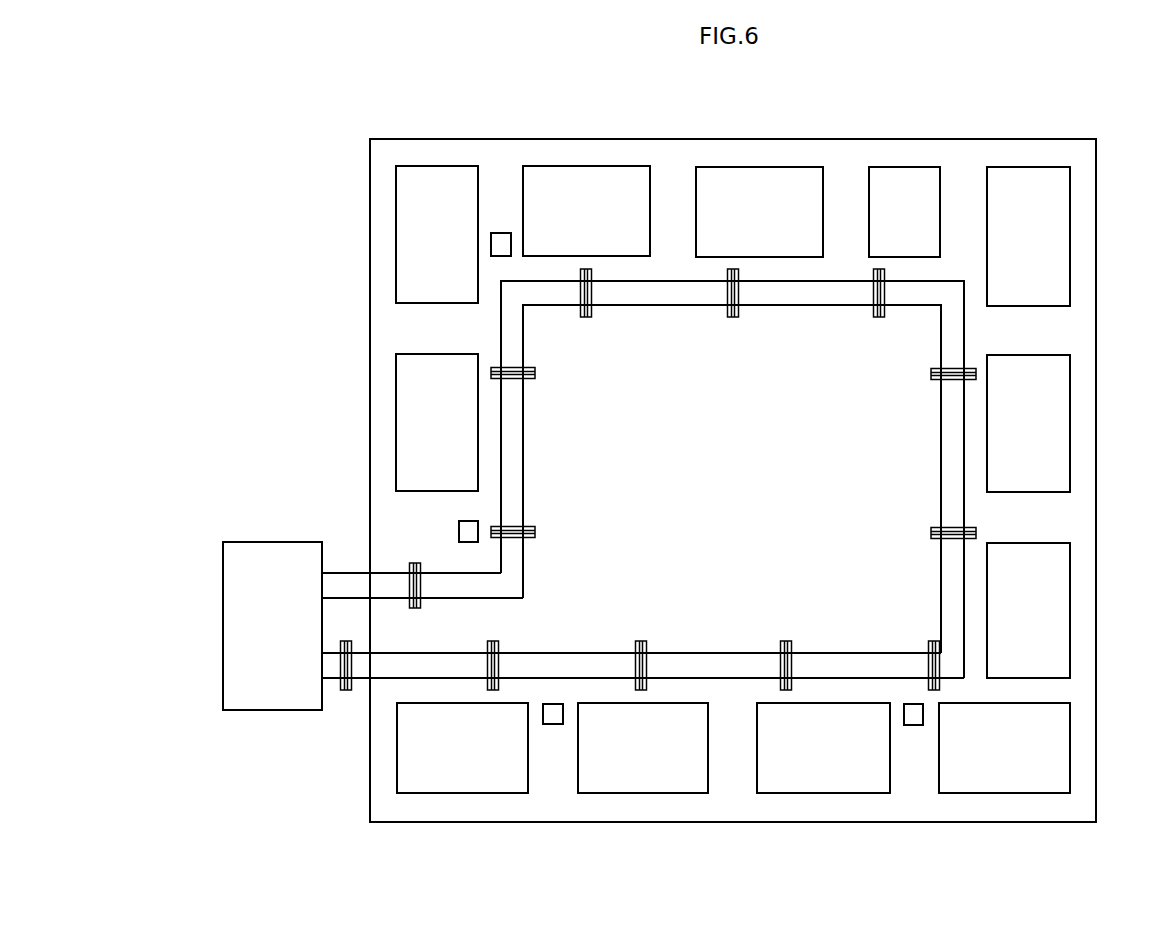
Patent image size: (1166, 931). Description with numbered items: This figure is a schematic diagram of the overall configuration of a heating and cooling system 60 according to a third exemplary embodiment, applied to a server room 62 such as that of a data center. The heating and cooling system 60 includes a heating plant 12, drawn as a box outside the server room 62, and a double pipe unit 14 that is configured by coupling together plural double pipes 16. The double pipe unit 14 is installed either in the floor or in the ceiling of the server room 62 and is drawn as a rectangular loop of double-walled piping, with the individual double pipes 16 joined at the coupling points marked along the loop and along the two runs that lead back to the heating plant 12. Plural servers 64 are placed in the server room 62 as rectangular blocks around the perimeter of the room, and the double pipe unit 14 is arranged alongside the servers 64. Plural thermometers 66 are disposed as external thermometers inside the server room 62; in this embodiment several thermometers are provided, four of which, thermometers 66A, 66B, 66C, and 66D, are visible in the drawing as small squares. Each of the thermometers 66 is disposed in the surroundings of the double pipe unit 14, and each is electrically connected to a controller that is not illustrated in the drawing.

The heating and cooling system 60 is at (267, 157).
The server room 62 is at (871, 138).
The heating plant 12 is at (242, 542).
The double pipe unit 14 is at (548, 460).
The double pipe 16 is at (790, 310).
The server 64 is at (739, 170).
The thermometer 66 is at (597, 400).
The thermometer 66A is at (459, 530).
The thermometer 66B is at (553, 704).
The thermometer 66C is at (500, 233).
The thermometer 66D is at (914, 704).